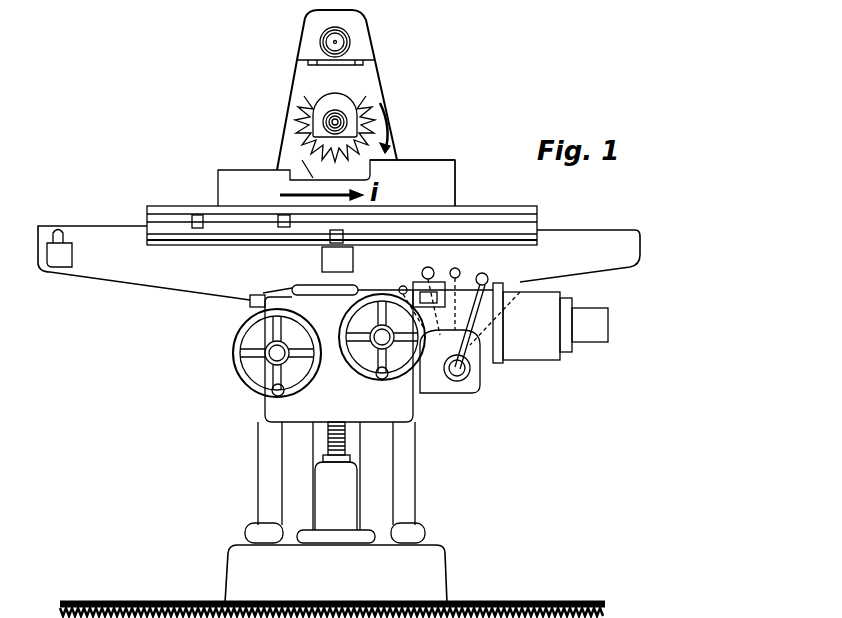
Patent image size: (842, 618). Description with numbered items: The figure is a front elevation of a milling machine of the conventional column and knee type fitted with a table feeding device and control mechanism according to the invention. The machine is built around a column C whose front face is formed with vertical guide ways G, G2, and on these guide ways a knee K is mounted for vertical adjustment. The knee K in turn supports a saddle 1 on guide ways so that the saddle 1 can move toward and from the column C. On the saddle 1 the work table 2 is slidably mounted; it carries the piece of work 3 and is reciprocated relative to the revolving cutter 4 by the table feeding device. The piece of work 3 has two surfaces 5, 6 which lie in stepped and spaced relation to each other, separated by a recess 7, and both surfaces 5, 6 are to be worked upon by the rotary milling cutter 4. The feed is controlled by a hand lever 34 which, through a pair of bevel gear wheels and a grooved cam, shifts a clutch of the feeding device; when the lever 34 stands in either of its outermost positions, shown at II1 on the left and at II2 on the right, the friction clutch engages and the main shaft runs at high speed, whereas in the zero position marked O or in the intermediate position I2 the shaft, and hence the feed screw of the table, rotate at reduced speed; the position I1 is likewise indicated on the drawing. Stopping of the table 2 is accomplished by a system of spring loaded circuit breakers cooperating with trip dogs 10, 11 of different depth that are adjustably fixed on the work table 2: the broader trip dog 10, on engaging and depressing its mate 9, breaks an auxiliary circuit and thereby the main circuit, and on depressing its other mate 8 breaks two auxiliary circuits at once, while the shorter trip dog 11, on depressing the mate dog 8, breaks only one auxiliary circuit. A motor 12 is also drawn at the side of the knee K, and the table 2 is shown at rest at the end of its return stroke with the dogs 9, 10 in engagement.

The saddle 1 is at (628, 243).
The work table 2 is at (523, 213).
The piece of work 3 is at (443, 191).
The revolving cutter 4 is at (303, 113).
The surface 5 is at (433, 160).
The surface 6 is at (245, 170).
The recess 7 is at (316, 150).
The mate dog 8 is at (345, 243).
The mate dog 9 is at (62, 231).
The trip dog 10 is at (196, 229).
The trip dog 11 is at (283, 228).
The motor 12 is at (544, 338).
The hand lever 34 is at (480, 357).
The knee K is at (310, 405).
The vertical guide way G is at (297, 458).
The column C is at (400, 435).
The vertical guide way G2 is at (377, 479).
The control handle I1 is at (427, 295).
The outermost lever position (left) II1 is at (402, 297).
The zero position O is at (456, 289).
The intermediate lever position I2 is at (477, 312).
The outermost lever position (right) II2 is at (503, 305).